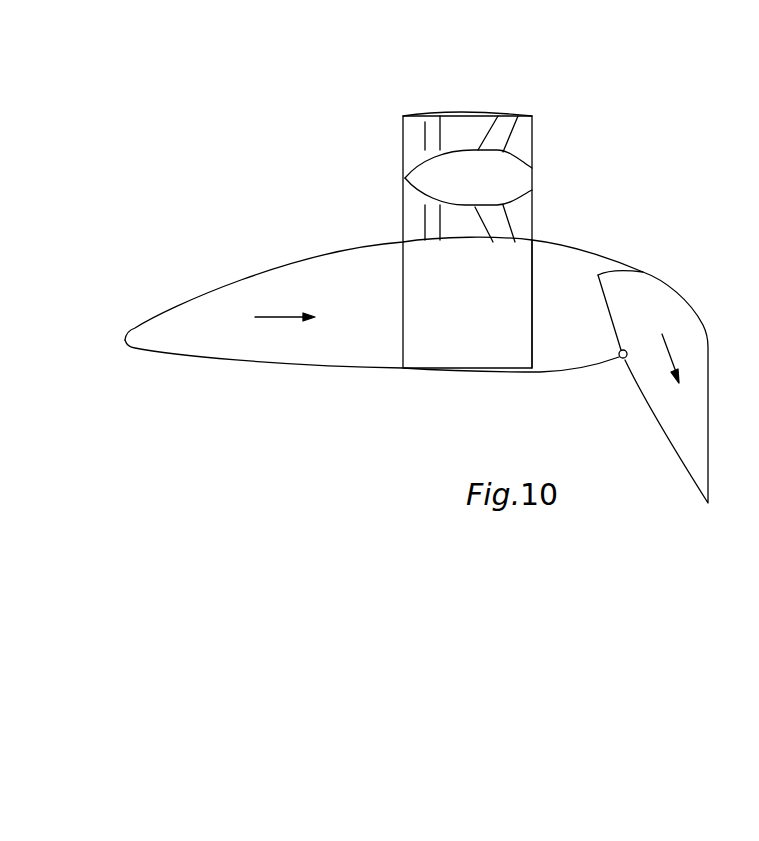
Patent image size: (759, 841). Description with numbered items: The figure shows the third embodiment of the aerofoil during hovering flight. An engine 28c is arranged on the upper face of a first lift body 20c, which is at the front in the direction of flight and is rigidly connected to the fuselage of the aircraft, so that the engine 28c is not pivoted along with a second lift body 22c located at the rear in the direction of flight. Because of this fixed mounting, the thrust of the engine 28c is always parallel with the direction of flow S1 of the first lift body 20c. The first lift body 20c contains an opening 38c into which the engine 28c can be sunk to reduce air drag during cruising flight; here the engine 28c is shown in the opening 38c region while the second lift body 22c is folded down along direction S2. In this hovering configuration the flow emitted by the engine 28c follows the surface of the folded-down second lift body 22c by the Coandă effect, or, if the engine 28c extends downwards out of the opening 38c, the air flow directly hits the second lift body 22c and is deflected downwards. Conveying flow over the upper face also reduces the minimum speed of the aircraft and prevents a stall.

The first lift body 20c is at (342, 257).
The engine 28c is at (517, 115).
The opening 38c is at (525, 277).
The second lift body 22c is at (692, 312).
The direction of flow S1 is at (285, 302).
The flap deflection direction arrow S2 is at (685, 358).